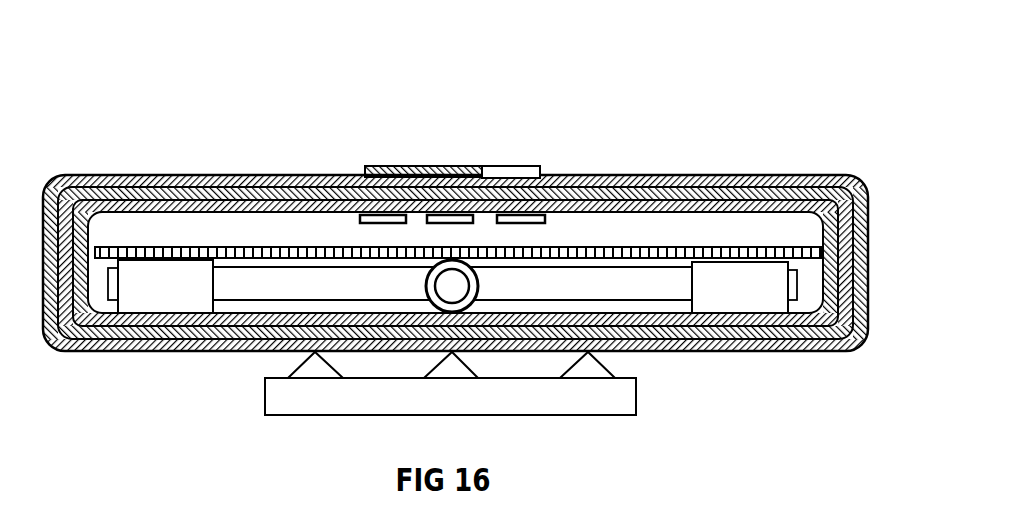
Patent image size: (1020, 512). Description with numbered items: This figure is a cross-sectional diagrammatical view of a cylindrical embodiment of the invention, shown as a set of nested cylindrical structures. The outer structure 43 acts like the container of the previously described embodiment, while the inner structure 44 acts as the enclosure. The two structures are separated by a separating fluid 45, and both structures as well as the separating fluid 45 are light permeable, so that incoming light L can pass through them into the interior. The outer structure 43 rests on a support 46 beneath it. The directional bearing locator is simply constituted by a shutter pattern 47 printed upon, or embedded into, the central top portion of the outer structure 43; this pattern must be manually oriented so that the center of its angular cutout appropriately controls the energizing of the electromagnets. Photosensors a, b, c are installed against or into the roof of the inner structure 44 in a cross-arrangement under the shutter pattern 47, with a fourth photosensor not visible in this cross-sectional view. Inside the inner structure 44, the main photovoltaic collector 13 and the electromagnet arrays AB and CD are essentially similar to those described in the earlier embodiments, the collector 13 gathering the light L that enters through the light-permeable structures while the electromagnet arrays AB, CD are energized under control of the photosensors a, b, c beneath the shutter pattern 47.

The outer structure 43 is at (510, 256).
The inner structure 44 is at (200, 192).
The separating fluid 45 is at (745, 176).
The support 46 is at (265, 394).
The shutter pattern 47 is at (450, 165).
The main photovoltaic collector 13 is at (660, 248).
The electromagnet array AB is at (227, 272).
The electromagnet array CD is at (478, 283).
The photosensor a is at (400, 227).
The photosensor b is at (466, 228).
The photosensor c is at (545, 227).
The light rays L is at (410, 150).